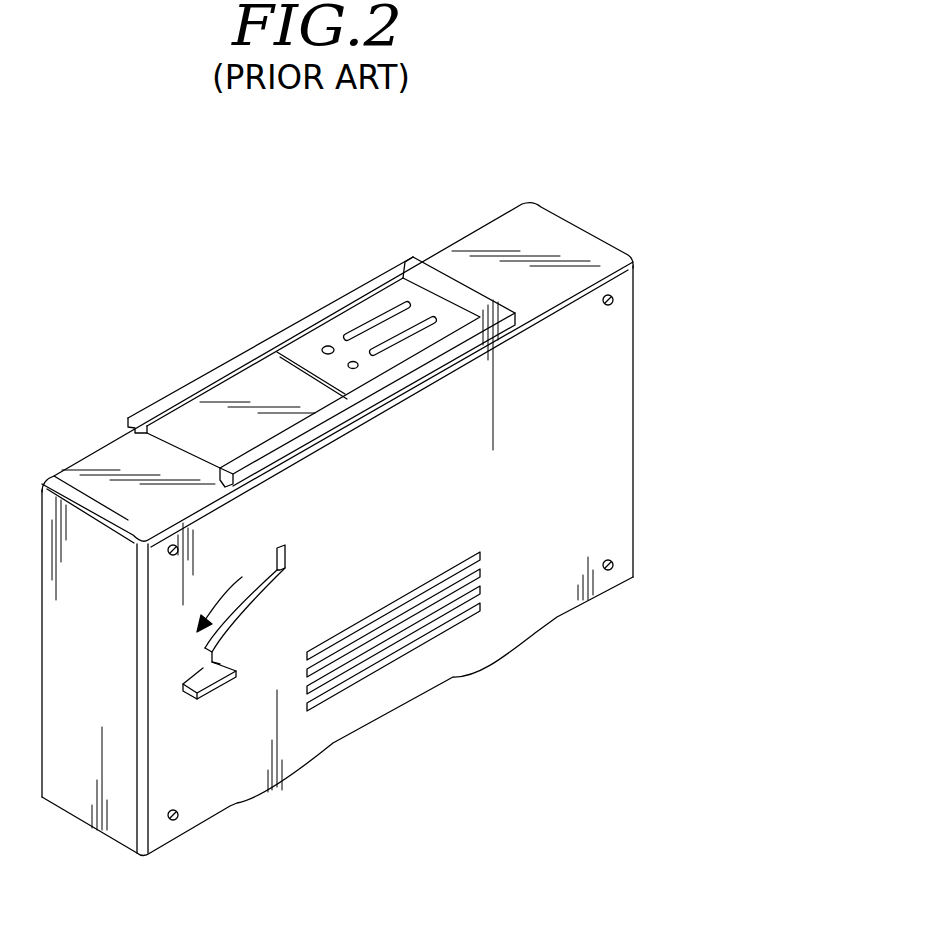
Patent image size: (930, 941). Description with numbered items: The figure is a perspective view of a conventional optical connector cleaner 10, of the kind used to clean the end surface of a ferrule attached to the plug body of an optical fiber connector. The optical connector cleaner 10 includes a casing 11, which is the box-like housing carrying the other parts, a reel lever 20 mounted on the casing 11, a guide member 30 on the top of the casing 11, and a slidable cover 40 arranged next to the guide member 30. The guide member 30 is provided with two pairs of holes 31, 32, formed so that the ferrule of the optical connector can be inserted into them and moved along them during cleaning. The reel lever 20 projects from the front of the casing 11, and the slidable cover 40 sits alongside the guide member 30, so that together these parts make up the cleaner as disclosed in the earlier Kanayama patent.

The optical connector cleaner 10 is at (553, 148).
The casing 11 is at (665, 383).
The reel lever 20 is at (222, 680).
The guide member 30 is at (403, 293).
The holes 31 is at (362, 334).
The holes 32 is at (328, 345).
The slidable cover 40 is at (182, 435).